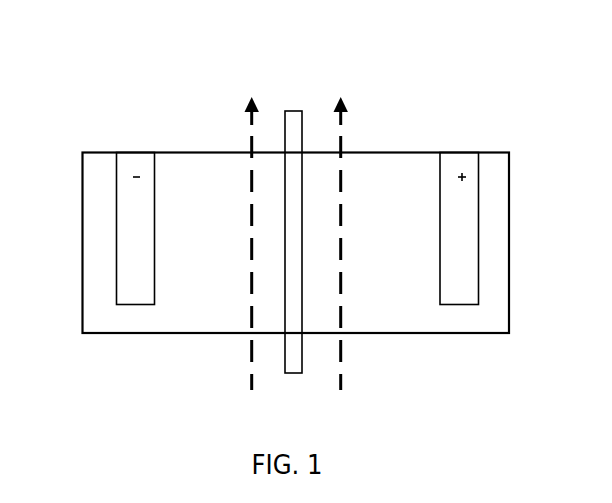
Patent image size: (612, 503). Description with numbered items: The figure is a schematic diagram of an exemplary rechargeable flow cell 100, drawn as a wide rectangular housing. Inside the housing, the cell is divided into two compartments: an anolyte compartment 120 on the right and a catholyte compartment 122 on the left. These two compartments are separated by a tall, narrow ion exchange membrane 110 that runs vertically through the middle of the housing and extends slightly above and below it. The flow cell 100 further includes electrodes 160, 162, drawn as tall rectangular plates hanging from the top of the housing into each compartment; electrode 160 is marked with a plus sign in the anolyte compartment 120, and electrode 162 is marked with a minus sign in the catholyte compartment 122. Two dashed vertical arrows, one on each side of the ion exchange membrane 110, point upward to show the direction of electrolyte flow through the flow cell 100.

The rechargeable flow cell 100 is at (120, 73).
The ion exchange membrane 110 is at (303, 128).
The anolyte compartment 120 is at (374, 243).
The catholyte compartment 122 is at (223, 243).
The electrode 160 is at (478, 183).
The electrode 162 is at (116, 183).